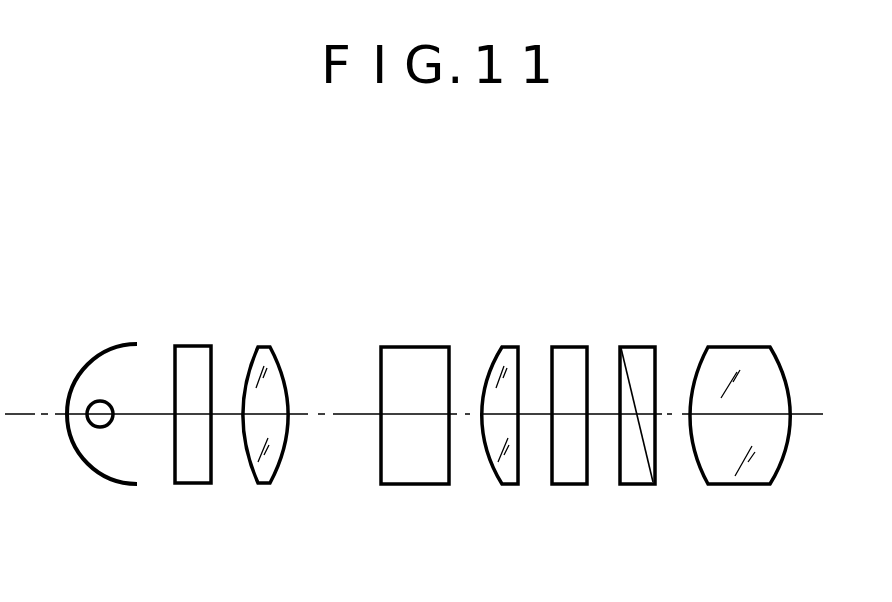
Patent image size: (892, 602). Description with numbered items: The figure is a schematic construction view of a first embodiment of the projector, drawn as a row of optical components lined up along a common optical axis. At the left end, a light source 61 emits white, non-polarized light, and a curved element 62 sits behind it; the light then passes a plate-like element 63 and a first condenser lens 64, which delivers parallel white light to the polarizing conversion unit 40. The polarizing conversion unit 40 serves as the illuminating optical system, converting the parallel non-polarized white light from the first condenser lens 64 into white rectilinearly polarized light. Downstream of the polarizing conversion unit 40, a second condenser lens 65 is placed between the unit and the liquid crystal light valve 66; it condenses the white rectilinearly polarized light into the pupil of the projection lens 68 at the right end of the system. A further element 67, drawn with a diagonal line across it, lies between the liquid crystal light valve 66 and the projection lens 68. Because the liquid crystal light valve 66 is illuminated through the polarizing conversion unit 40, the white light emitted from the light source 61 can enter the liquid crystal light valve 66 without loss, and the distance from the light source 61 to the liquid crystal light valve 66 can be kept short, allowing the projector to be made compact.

The polarizing conversion unit 40 is at (410, 347).
The light source 61 is at (90, 424).
The reflector 62 is at (89, 371).
The plate 63 is at (196, 346).
The first condenser lens 64 is at (268, 347).
The second condenser lens 65 is at (508, 347).
The liquid crystal light valve 66 is at (573, 347).
The polarizing element 67 is at (646, 347).
The projection lens 68 is at (748, 347).